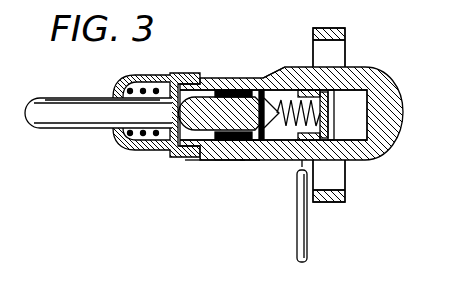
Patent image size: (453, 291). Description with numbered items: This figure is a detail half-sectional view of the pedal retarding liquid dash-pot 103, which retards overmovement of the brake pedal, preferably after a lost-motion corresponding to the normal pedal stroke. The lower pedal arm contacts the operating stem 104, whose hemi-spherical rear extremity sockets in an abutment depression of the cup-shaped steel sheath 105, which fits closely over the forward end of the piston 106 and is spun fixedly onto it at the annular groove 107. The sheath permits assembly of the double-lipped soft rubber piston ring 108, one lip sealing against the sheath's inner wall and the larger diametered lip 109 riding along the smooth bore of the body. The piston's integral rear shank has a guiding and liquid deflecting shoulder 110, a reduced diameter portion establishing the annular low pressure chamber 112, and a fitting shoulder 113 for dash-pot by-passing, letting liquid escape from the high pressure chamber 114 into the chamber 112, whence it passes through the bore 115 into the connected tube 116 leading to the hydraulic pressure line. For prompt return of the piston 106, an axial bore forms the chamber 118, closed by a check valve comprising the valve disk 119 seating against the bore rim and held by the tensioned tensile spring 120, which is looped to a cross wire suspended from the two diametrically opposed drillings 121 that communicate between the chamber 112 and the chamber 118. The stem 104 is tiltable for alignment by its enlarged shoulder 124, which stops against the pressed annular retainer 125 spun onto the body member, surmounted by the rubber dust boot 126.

The liquid dash-pot 103 is at (352, 67).
The operating stem 104 is at (55, 130).
The cup-shaped steel sheath 105 is at (216, 86).
The piston 106 is at (223, 89).
The annular groove 107 is at (197, 161).
The double-lipped soft rubber piston ring 108 is at (228, 161).
The larger diametered lip 109 is at (247, 161).
The guiding and liquid deflecting shoulder 110 is at (268, 93).
The low pressure chamber 112 is at (267, 161).
The shoulder 113 is at (292, 161).
The high pressure chamber 114 is at (347, 115).
The bore 115 is at (303, 90).
The connected tube 116 is at (296, 207).
The chamber 118 is at (328, 133).
The valve disk 119 is at (329, 113).
The tensile spring 120 is at (348, 163).
The drillings 121 is at (272, 92).
The enlarged shoulder 124 is at (147, 151).
The pressed annular retainer 125 is at (165, 75).
The rubber dust boot 126 is at (158, 158).